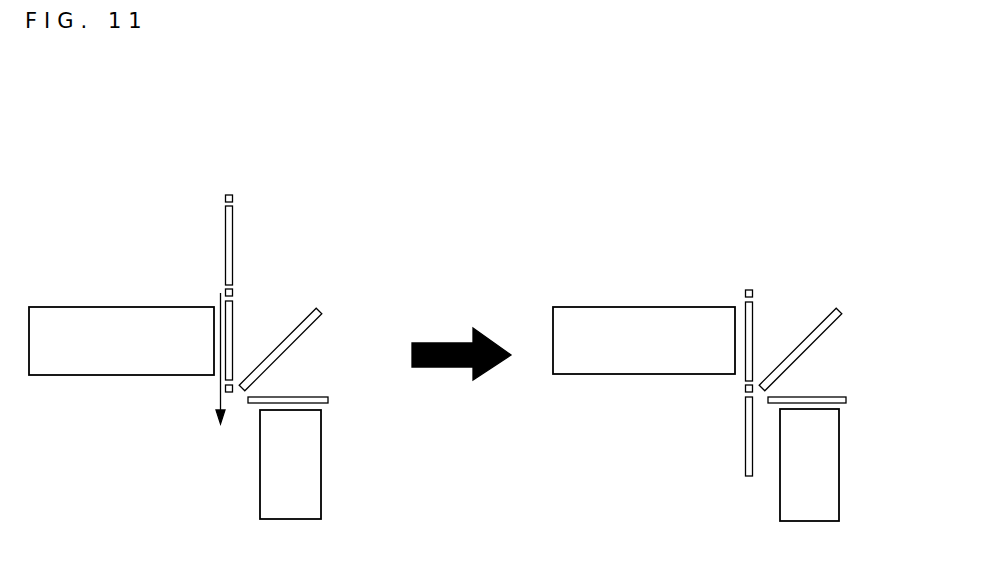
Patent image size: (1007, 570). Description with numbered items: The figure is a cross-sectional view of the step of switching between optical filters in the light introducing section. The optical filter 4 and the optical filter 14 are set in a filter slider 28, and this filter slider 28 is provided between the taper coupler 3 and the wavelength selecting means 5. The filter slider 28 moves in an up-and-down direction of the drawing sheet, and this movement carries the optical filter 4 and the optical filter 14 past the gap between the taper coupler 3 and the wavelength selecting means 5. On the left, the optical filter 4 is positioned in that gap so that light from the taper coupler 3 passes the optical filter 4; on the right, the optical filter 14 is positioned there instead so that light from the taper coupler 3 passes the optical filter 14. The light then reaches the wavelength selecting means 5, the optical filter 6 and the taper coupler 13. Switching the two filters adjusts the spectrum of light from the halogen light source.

The taper coupler 3 is at (122, 314).
The optical filter 4 is at (233, 318).
The wavelength selecting means 5 is at (318, 312).
The optical filter 6 is at (328, 400).
The taper coupler 13 is at (312, 465).
The optical filter 14 is at (233, 247).
The filter slider 28 is at (233, 199).